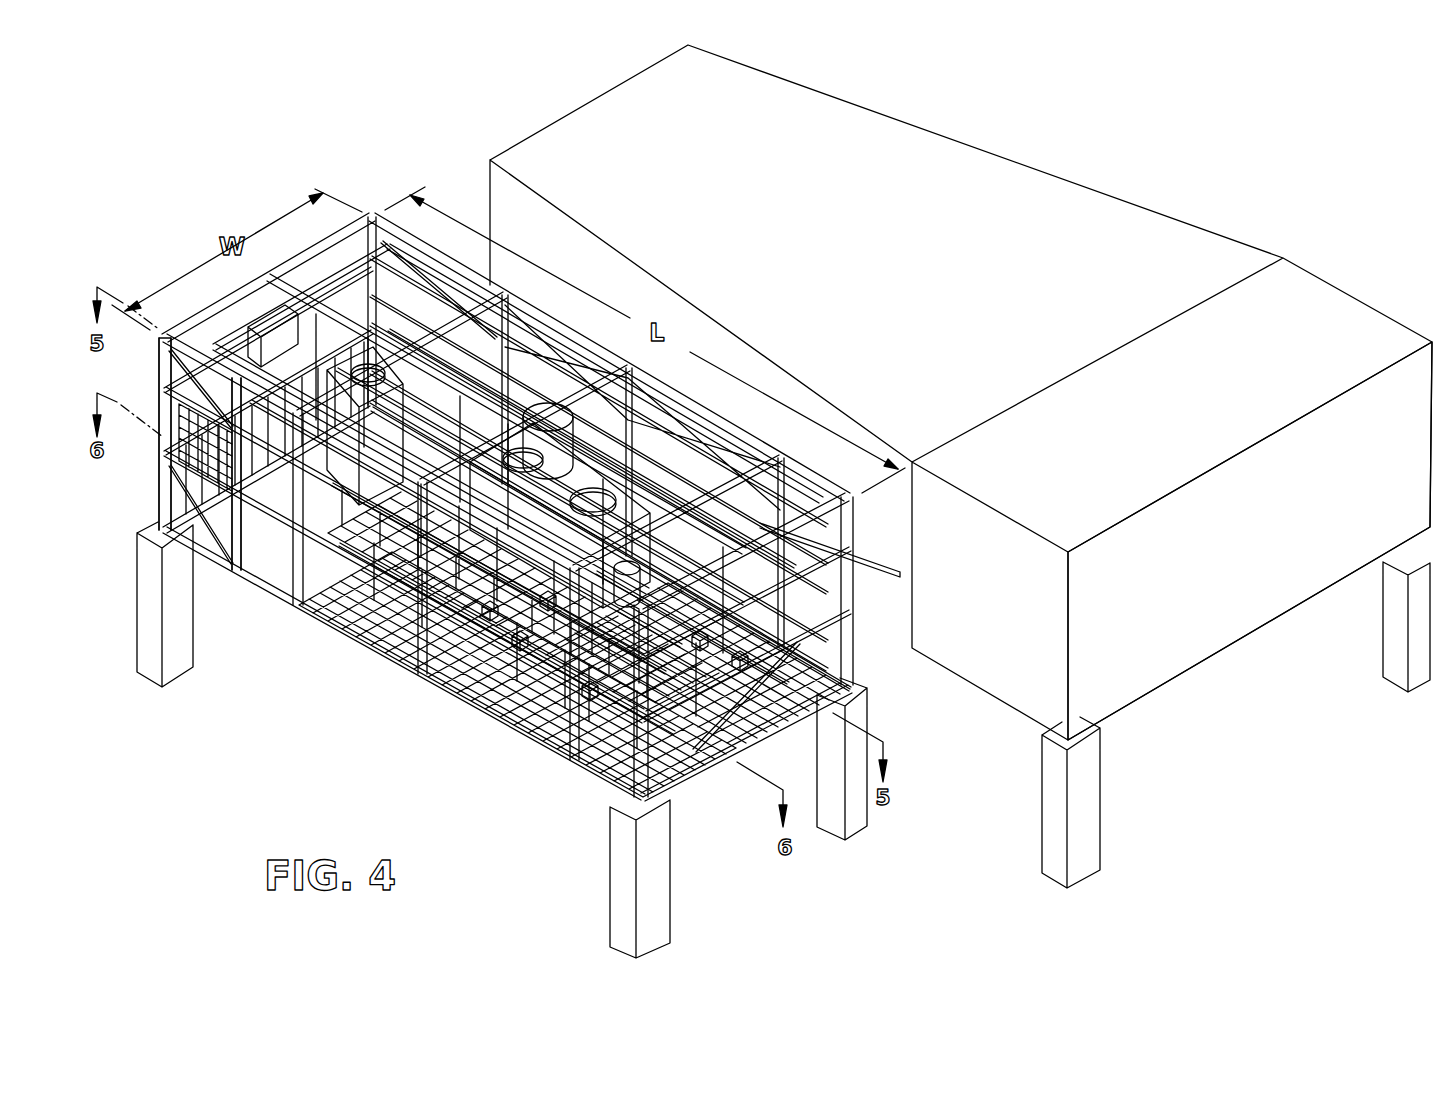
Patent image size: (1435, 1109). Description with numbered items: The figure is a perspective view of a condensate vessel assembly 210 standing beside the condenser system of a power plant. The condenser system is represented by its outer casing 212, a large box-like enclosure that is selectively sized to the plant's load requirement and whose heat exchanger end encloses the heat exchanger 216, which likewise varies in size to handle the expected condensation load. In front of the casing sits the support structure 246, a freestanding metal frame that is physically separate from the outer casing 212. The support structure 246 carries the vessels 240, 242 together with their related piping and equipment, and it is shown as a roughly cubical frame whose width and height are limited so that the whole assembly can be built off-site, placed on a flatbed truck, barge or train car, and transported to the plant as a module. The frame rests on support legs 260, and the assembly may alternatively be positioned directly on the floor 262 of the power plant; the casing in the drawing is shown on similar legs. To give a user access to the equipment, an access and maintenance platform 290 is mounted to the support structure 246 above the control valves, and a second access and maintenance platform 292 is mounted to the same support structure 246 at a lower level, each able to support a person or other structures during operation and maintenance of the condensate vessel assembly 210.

The condensate vessel assembly 210 is at (278, 183).
The outer casing 212 is at (1033, 200).
The heat exchanger 216 is at (1154, 619).
The vessel 240 is at (357, 388).
The vessel 242 is at (582, 507).
The support structure 246 is at (160, 443).
The support legs 260 is at (175, 610).
The floor 262 is at (330, 783).
The access and maintenance platform 290 is at (226, 482).
The access and maintenance platform 292 is at (365, 652).